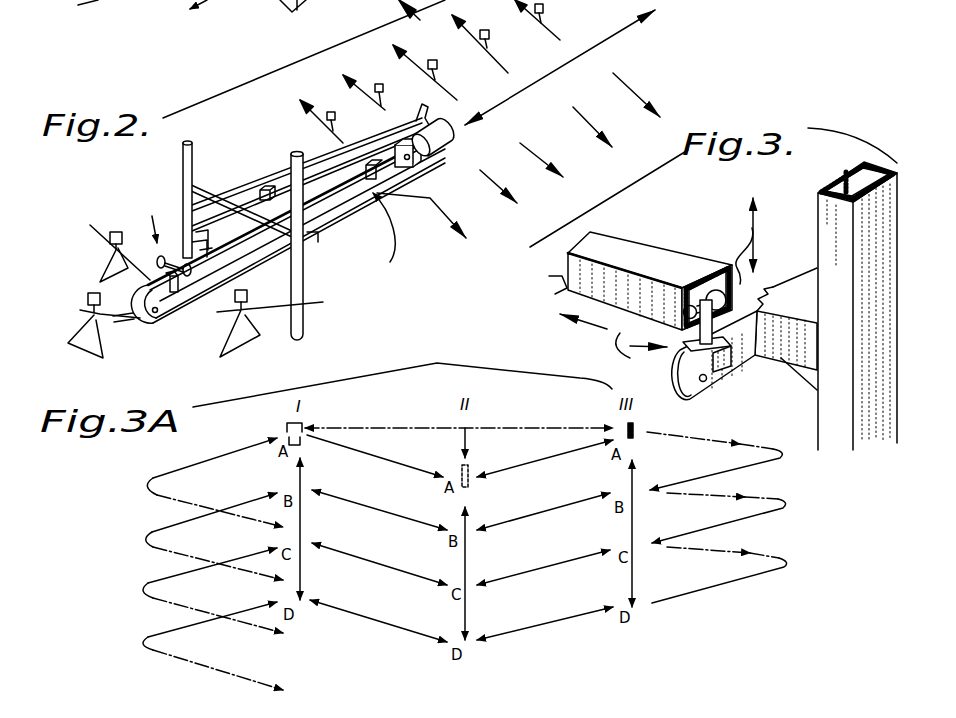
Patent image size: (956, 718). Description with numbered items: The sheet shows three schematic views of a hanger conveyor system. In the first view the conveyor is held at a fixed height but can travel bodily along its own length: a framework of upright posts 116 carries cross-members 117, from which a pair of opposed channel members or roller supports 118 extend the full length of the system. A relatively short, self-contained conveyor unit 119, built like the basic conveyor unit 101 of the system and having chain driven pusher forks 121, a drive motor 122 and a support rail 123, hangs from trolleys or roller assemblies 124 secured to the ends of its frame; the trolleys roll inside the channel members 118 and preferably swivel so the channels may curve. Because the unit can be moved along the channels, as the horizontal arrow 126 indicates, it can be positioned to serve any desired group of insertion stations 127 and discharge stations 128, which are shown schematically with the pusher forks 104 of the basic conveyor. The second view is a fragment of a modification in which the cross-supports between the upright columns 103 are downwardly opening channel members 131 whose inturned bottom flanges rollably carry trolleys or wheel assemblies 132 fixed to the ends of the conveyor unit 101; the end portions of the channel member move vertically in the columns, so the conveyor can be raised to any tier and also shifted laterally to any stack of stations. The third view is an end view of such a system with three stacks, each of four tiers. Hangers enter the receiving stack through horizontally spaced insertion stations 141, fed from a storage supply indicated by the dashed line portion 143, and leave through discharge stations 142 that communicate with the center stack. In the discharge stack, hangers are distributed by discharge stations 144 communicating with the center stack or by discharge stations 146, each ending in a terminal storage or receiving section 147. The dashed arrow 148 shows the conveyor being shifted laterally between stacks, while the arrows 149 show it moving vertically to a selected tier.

In FIG. 3, the conveyor unit 101 is at (652, 377).
In FIG. 3A, the conveyor unit 101 is at (286, 428).
In FIG. 3, the upright channel-shaped standards or columns 103 is at (819, 217).
In FIG. 2, the pusher forks 104 is at (216, 13).
In FIG. 2, the upright posts 116 is at (182, 150).
In FIG. 2, the cross-members 117 is at (199, 189).
In FIG. 2, the channel members or roller supports 118 is at (261, 187).
In FIG. 2, the conveyor unit 119 is at (398, 233).
In FIG. 2, the pusher forks 121 is at (165, 322).
In FIG. 2, the drive motor 122 is at (522, 143).
In FIG. 2, the support rail 123 is at (261, 262).
In FIG. 2, the trolleys or roller assemblies 124 is at (298, 181).
In FIG. 2, the horizontal arrow 126 is at (638, 24).
In FIG. 2, the insertion stations 127 is at (352, 88).
In FIG. 2, the discharge stations 128 is at (614, 74).
In FIG. 3, the channel member 131 is at (658, 252).
In FIG. 3, the trolleys or wheel assemblies 132 is at (737, 380).
In FIG. 3A, the insertion stations 141 is at (763, 459).
In FIG. 3A, the discharge stations 142 is at (548, 501).
In FIG. 3A, the dashed line portion 143 is at (687, 435).
In FIG. 3A, the discharge stations 144 is at (368, 457).
In FIG. 3A, the discharge stations 146 is at (205, 460).
In FIG. 3A, the terminal storage or receiving section 147 is at (198, 490).
In FIG. 3A, the dashed arrow 148 is at (390, 425).
In FIG. 3A, the arrows 149 is at (302, 526).